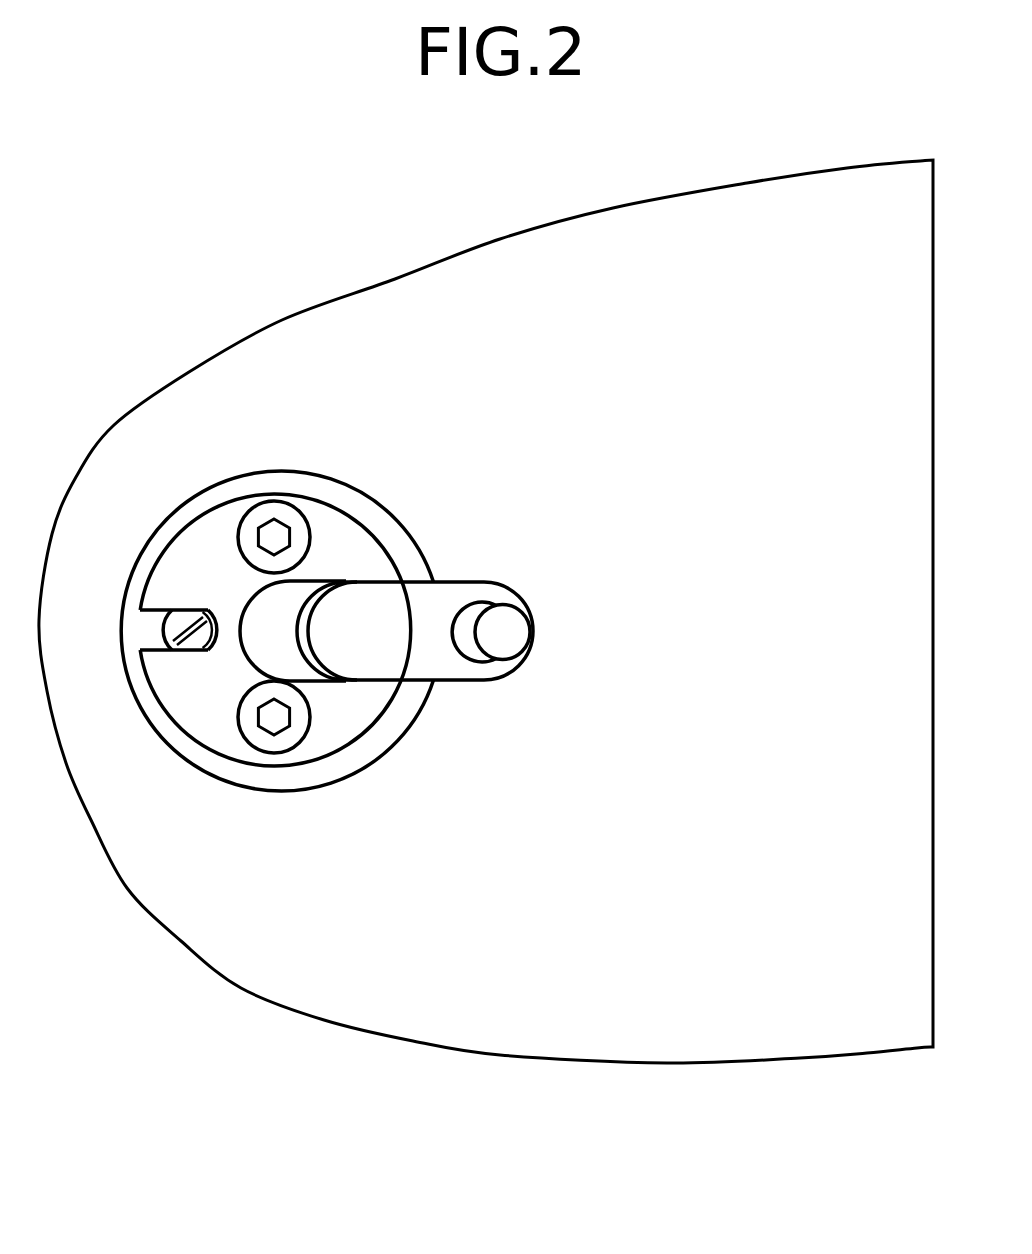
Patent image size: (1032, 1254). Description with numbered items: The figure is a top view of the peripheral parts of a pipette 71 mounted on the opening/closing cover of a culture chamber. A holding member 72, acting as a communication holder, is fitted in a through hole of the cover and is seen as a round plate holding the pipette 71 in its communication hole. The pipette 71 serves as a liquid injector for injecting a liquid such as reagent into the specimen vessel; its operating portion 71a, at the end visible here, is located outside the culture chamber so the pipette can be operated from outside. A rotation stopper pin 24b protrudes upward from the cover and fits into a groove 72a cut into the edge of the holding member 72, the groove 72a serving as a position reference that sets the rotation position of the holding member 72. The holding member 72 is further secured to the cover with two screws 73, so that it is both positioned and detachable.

The rotation stopper pin 24b is at (177, 611).
The pipette 71 is at (412, 599).
The operating portion 71a is at (503, 630).
The holding member 72 is at (341, 530).
The groove 72a is at (197, 653).
The screws 73 is at (269, 526).